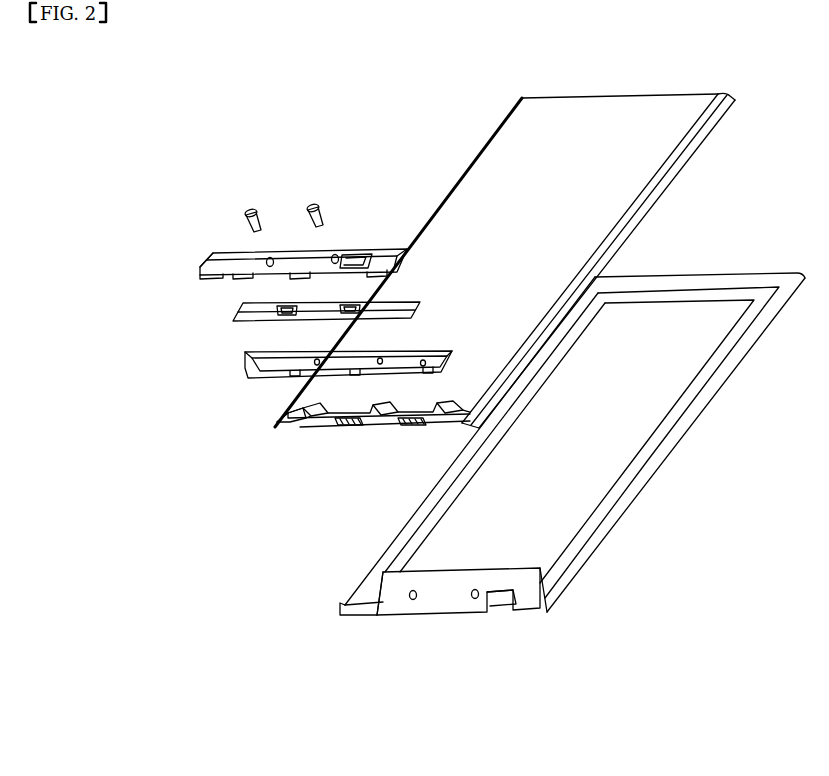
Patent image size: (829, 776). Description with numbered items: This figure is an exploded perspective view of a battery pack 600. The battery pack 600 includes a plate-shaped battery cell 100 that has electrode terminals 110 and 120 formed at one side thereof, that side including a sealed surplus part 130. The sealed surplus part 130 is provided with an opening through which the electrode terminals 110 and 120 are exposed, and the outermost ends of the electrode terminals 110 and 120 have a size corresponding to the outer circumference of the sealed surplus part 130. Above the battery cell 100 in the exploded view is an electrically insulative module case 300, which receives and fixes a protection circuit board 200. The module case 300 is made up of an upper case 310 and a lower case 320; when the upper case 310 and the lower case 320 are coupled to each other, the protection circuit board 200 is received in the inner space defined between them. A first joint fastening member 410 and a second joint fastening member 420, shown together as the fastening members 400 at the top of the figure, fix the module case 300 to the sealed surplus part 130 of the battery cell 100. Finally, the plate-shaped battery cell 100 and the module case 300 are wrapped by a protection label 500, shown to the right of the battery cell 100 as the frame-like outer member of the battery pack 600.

The battery pack 600 is at (148, 158).
The plate-shaped battery cell 100 is at (487, 296).
The electrode terminal 110 is at (346, 432).
The electrode terminal 120 is at (408, 432).
The sealed surplus part 130 is at (300, 421).
The protection circuit board 200 is at (431, 309).
The module case 300 is at (97, 298).
The upper case 310 is at (195, 274).
The lower case 320 is at (234, 374).
The fastening members 400 is at (250, 158).
The first joint fastening member 410 is at (249, 206).
The second joint fastening member 420 is at (312, 205).
The protection label 500 is at (623, 521).